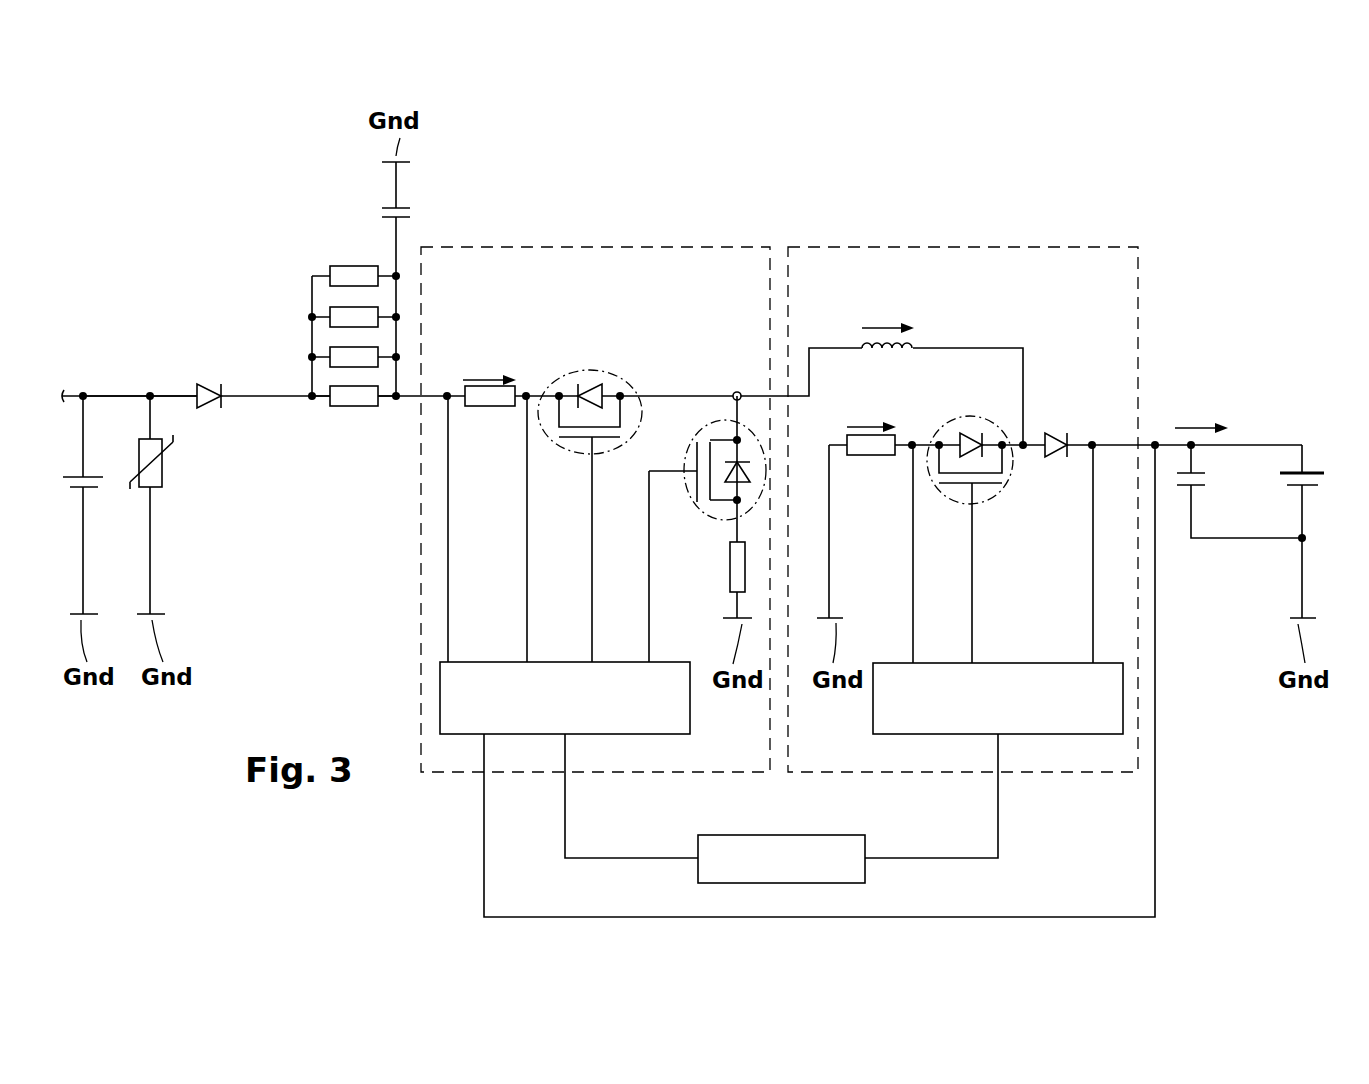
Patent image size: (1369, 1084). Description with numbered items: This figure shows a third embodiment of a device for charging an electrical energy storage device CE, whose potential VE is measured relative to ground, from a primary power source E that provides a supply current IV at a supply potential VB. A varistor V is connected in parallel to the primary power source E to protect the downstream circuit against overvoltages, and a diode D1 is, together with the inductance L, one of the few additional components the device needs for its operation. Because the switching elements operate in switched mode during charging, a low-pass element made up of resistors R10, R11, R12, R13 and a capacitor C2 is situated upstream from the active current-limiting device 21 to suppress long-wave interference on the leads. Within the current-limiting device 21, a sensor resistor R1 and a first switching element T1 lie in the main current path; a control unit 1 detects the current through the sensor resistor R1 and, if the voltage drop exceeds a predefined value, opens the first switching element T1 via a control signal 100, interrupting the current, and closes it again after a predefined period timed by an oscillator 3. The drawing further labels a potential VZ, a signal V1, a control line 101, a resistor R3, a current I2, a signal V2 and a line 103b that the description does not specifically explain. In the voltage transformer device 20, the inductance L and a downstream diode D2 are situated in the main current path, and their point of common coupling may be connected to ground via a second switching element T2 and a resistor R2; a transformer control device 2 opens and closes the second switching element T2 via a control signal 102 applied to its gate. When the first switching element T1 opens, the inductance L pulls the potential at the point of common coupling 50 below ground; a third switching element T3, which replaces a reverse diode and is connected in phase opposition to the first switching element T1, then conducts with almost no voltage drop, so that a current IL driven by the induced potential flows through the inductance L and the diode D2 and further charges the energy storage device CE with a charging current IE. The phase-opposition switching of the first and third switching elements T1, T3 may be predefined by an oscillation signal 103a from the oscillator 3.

The primary power source E is at (95, 473).
The supply potential VB is at (163, 392).
The varistor V is at (153, 477).
The diode D1 is at (218, 385).
The resistor R13 is at (352, 278).
The resistor R12 is at (352, 319).
The resistor R11 is at (352, 359).
The resistor R10 is at (352, 398).
The capacitor C2 is at (413, 208).
The active current-limiting device 21 is at (605, 246).
The supply current IV is at (481, 378).
The sensor resistor R1 is at (494, 404).
The intermediate voltage line VZ is at (448, 576).
The voltage V1 line V1 is at (527, 546).
The first switching element T1 is at (596, 370).
The control signal 100 is at (590, 578).
The point of common coupling 50 is at (737, 391).
The third switching element T3 is at (710, 516).
The control line of T3 101 is at (648, 560).
The third resistor R3 is at (730, 572).
The control unit 1 is at (574, 716).
The voltage transformer device 20 is at (988, 245).
The current IL is at (883, 325).
The inductance L is at (889, 353).
The current through R2 I2 is at (863, 426).
The resistor R2 is at (871, 456).
The voltage V2 line V2 is at (914, 585).
The second switching element T2 is at (1010, 490).
The control signal 102 is at (974, 583).
The diode D2 is at (1057, 434).
The transformer control device 2 is at (1007, 716).
The potential VE is at (1093, 628).
The charging current IE is at (1190, 425).
The electrical energy storage device CE is at (1318, 481).
The oscillator 3 is at (791, 876).
The oscillation signal 103a is at (647, 856).
The communication line b 103b is at (930, 856).